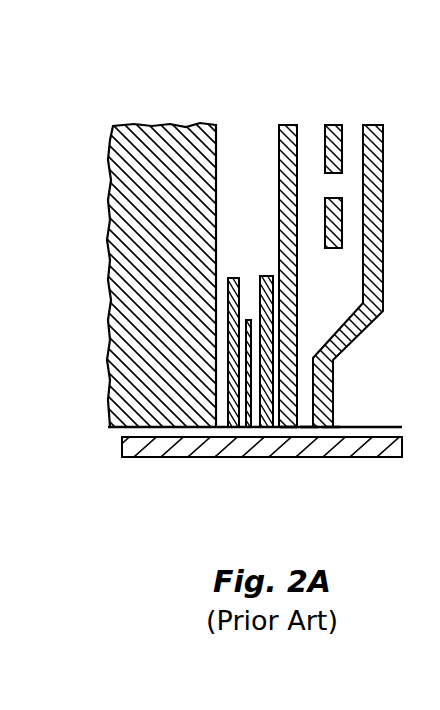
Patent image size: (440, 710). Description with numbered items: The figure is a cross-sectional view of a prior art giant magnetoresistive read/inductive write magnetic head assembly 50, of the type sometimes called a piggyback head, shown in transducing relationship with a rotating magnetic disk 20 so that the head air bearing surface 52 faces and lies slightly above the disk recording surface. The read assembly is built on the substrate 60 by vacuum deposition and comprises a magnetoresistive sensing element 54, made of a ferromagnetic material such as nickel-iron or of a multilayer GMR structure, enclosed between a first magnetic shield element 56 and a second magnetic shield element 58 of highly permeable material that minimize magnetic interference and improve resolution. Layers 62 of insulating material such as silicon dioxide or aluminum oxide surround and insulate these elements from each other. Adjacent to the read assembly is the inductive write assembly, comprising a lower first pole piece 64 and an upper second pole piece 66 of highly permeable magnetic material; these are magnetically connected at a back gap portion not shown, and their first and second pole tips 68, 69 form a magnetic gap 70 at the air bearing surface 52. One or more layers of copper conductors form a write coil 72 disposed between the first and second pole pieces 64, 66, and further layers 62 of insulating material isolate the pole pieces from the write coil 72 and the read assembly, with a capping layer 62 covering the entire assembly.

The rotating magnetic disk 20 is at (404, 447).
The magnetic head assembly 50 is at (130, 275).
The air bearing surface 52 is at (363, 426).
The magnetoresistive sensing element 54 is at (248, 428).
The first magnetic shield element 56 is at (232, 428).
The second magnetic shield element 58 is at (267, 430).
The substrate 60 is at (109, 355).
The layers of insulating material 62 is at (253, 120).
The first pole piece 64 is at (279, 215).
The second pole piece 66 is at (384, 152).
The first pole tip 68 is at (291, 430).
The second pole tip 69 is at (330, 430).
The magnetic gap 70 is at (310, 430).
The write coil 72 is at (331, 125).